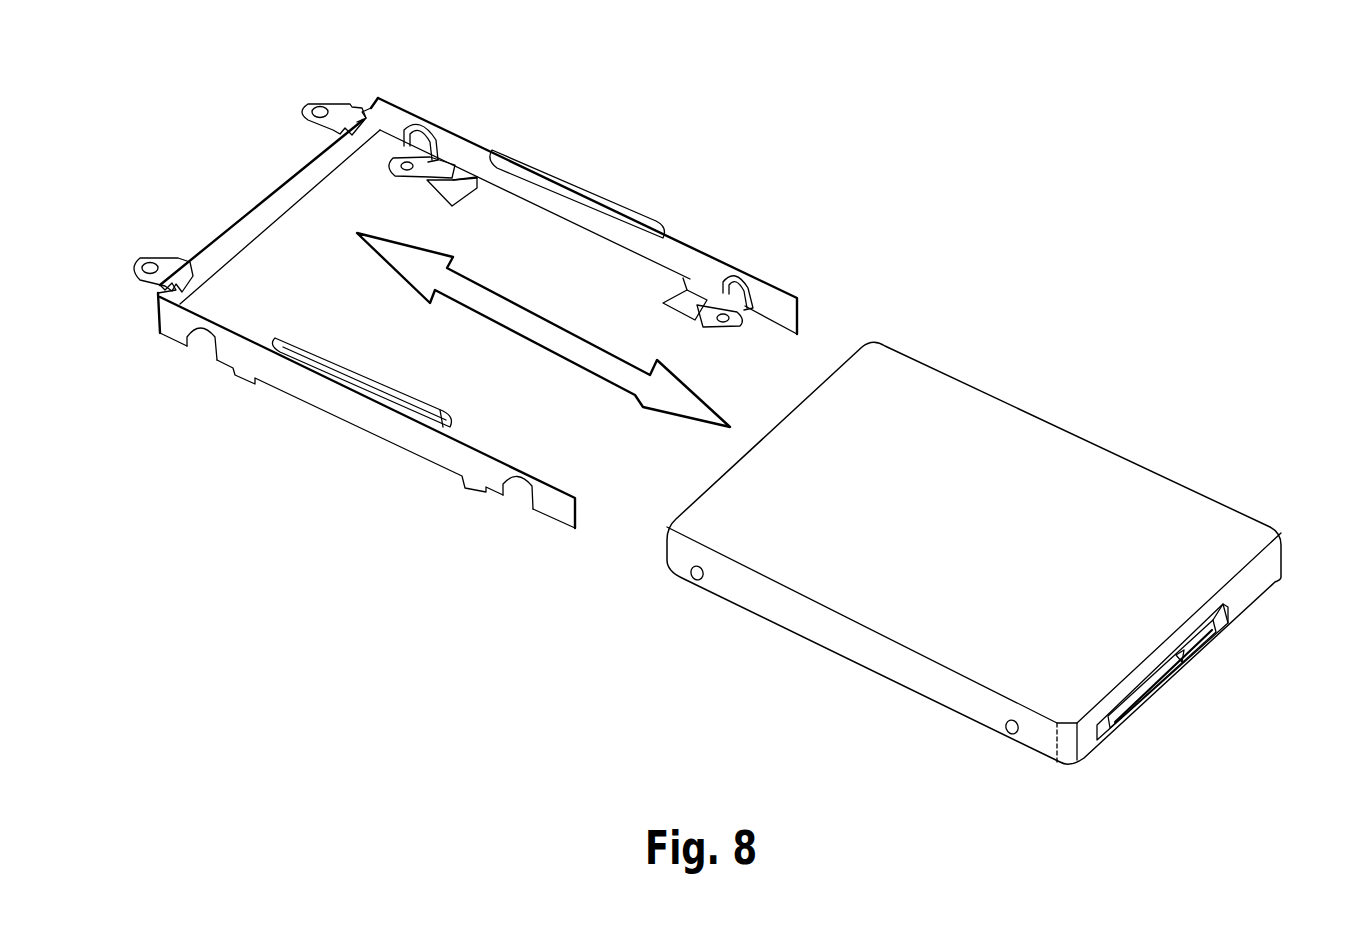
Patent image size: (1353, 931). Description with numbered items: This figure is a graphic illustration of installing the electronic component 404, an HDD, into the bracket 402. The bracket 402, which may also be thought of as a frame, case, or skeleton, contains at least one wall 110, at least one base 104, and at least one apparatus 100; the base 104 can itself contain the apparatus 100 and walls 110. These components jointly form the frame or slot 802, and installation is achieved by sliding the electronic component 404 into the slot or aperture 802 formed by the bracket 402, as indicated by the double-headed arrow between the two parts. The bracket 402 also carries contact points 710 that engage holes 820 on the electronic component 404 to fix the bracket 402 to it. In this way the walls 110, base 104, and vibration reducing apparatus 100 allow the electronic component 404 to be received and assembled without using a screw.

The apparatus 100 is at (455, 190).
The base 104 is at (322, 165).
The wall 110 is at (423, 406).
The bracket 402 is at (466, 313).
The electronic component 404 is at (972, 537).
The contact point 710 is at (417, 138).
The slot or aperture 802 is at (355, 297).
The hole 820 is at (693, 582).